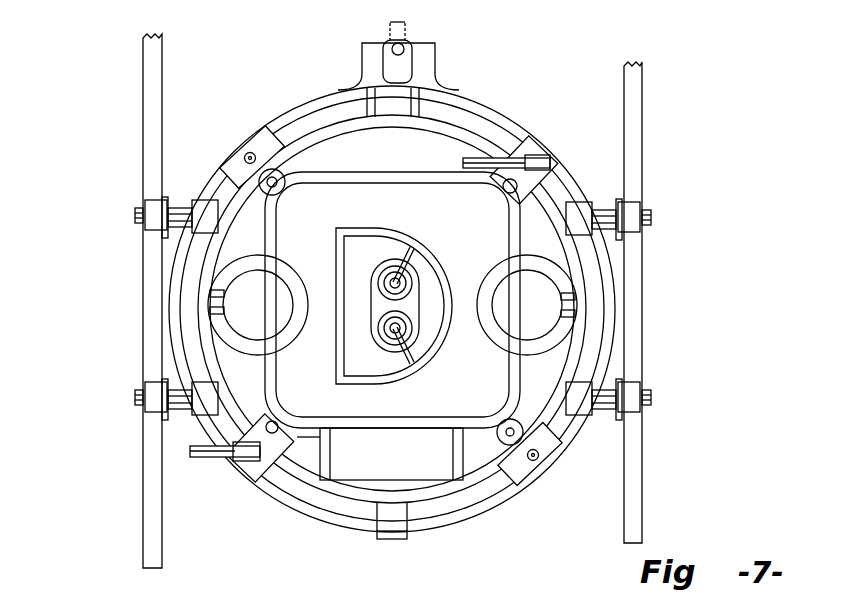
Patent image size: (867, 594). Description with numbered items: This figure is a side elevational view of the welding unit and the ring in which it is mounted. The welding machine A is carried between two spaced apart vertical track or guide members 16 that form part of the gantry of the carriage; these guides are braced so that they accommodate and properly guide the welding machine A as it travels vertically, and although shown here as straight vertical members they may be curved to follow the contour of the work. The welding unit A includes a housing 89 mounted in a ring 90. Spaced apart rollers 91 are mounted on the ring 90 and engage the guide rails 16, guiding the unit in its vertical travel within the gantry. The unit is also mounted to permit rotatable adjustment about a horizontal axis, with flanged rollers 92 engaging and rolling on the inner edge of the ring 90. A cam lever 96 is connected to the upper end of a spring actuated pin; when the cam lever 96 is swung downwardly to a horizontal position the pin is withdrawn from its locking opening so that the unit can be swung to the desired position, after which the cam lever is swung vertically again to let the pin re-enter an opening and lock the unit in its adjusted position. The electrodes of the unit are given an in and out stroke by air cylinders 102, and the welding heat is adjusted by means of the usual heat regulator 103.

The vertical track or guide members 16 is at (142, 298).
The housing 89 is at (316, 413).
The ring 90 is at (470, 123).
The rollers 91 is at (143, 225).
The flanged rollers 92 is at (292, 153).
The cam lever 96 is at (478, 137).
The air cylinders 102 is at (240, 322).
The heat regulator 103 is at (387, 368).
The welding machine A is at (460, 240).